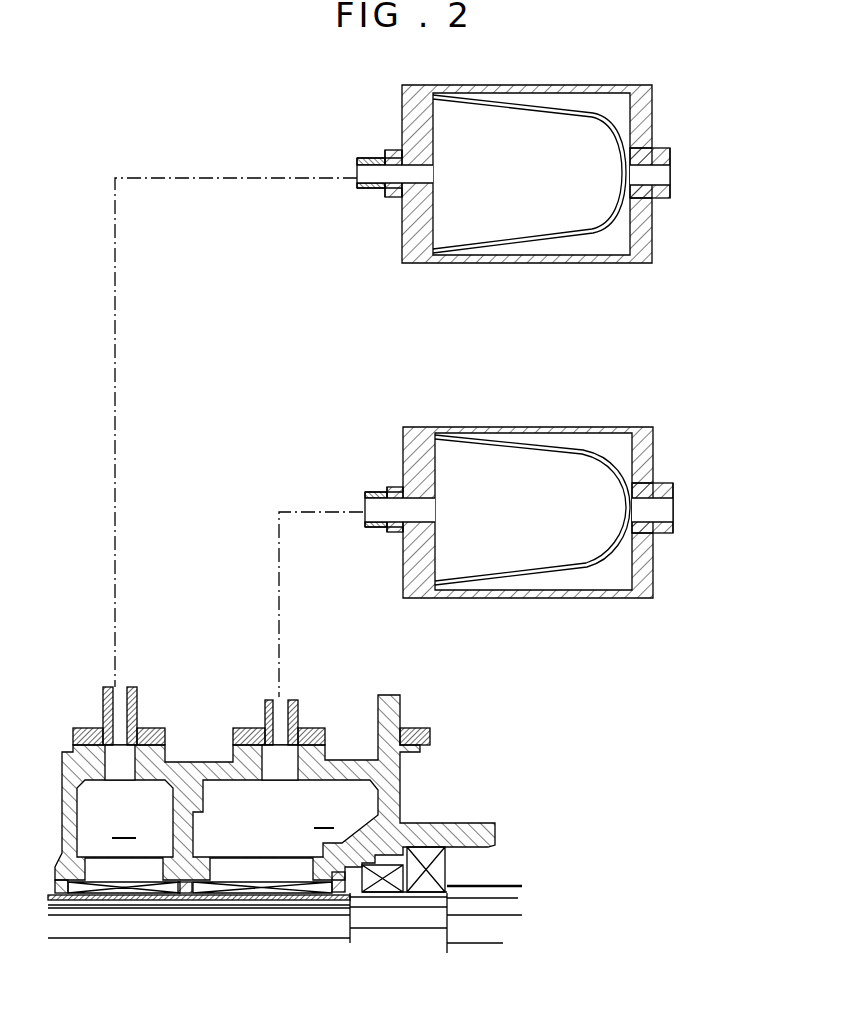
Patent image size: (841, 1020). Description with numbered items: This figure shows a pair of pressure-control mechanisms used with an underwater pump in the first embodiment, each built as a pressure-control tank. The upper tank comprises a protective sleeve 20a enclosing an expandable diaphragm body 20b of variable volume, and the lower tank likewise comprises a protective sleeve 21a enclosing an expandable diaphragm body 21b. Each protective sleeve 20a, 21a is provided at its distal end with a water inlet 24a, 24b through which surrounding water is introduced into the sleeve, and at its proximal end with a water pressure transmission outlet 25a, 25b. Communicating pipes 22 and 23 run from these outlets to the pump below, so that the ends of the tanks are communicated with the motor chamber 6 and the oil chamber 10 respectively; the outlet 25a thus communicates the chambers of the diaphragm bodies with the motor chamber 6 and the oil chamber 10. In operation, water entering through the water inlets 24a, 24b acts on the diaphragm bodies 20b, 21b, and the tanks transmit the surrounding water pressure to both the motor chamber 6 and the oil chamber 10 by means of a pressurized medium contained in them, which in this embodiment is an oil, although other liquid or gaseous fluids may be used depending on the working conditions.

The protective sleeve 20a is at (622, 90).
The expandable diaphragm body 20b is at (597, 227).
The water inlet 24a is at (668, 173).
The water pressure transmission outlet 25a is at (418, 180).
The communicating pipe 22 is at (115, 333).
The protective sleeve 21a is at (625, 430).
The expandable diaphragm body 21b is at (583, 575).
The water inlet 24b is at (663, 507).
The water pressure transmission outlet 25b is at (418, 513).
The communicating pipe 23 is at (278, 570).
The oil chamber 10 is at (199, 812).
The motor chamber 6 is at (288, 824).